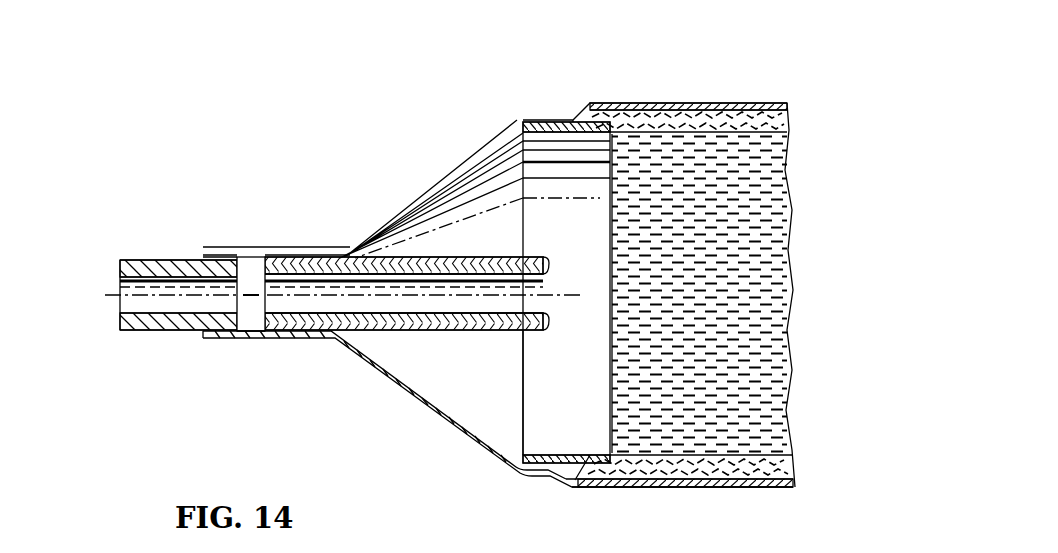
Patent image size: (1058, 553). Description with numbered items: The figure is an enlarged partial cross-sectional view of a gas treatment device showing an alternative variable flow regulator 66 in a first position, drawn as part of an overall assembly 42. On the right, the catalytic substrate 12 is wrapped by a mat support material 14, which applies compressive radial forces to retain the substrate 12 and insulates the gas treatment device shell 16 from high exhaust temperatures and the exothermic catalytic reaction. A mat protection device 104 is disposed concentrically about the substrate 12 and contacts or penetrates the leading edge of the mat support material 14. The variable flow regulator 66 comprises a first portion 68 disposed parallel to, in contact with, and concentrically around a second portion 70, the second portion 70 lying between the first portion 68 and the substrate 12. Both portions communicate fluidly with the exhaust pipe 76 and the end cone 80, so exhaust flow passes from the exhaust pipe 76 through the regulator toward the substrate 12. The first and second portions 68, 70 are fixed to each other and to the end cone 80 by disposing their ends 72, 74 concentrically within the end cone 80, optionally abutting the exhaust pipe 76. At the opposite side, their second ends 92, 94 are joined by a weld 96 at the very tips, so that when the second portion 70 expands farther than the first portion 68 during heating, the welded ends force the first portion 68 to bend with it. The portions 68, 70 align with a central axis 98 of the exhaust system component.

The substrate 12 is at (699, 293).
The mat support material 14 is at (789, 115).
The gas treatment device shell 16 is at (647, 103).
The fitting assembly 42 is at (473, 114).
The variable flow regulator 66 is at (426, 333).
The first portion 68 is at (345, 262).
The second portion 70 is at (312, 272).
The end of first portion 72 is at (240, 333).
The end of second portion 74 is at (242, 258).
The exhaust pipe 76 is at (138, 333).
The end cone 80 is at (432, 182).
The second end of first portion 92 is at (535, 335).
The second end of second portion 94 is at (548, 309).
The weld 96 is at (548, 270).
The axis 98 is at (108, 293).
The mat protection device 104 is at (556, 120).